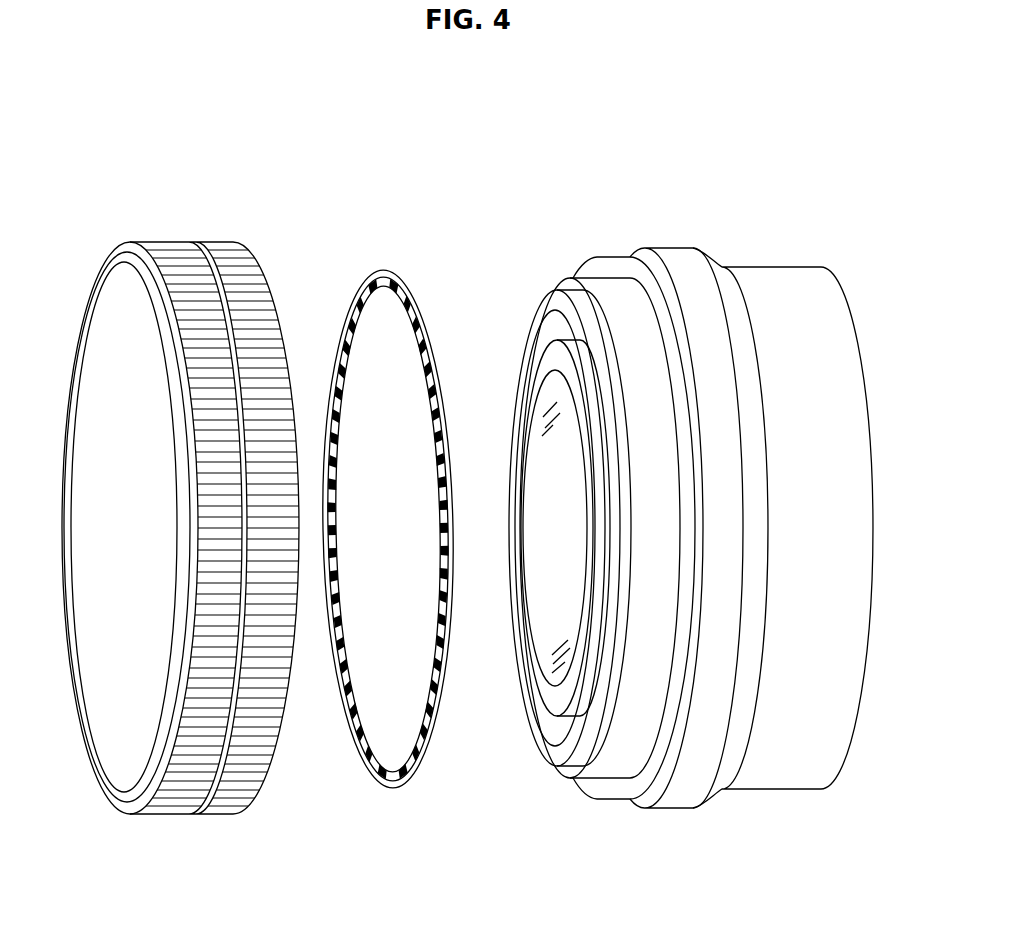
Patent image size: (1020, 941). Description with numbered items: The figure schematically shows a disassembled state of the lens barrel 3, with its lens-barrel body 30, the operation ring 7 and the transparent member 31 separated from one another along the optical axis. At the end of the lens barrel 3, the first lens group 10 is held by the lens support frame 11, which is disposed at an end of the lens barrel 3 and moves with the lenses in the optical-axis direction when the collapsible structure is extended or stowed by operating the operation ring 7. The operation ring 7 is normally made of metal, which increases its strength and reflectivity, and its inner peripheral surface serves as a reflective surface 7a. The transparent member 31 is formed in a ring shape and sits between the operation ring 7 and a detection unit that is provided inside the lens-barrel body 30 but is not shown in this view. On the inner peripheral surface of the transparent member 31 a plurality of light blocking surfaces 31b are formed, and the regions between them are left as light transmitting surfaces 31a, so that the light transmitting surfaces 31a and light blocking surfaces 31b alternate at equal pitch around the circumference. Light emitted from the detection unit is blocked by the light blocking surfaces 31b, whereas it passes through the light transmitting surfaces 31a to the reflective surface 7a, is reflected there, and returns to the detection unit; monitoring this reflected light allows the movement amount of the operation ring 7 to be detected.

The lens barrel 3 is at (408, 148).
The operation ring 7 is at (203, 240).
The reflective surface 7a is at (128, 305).
The first lens group 10 is at (547, 489).
The lens support frame 11 is at (558, 358).
The lens-barrel body 30 is at (673, 247).
The transparent member 31 is at (393, 268).
The light transmitting surface 31a is at (428, 330).
The light blocking surface 31b is at (431, 299).